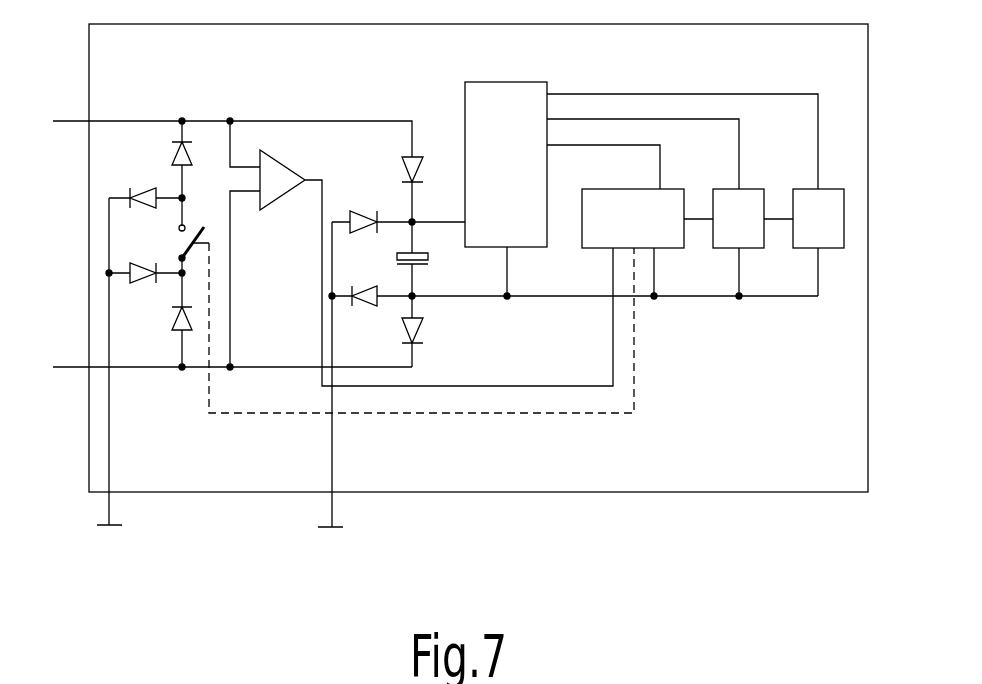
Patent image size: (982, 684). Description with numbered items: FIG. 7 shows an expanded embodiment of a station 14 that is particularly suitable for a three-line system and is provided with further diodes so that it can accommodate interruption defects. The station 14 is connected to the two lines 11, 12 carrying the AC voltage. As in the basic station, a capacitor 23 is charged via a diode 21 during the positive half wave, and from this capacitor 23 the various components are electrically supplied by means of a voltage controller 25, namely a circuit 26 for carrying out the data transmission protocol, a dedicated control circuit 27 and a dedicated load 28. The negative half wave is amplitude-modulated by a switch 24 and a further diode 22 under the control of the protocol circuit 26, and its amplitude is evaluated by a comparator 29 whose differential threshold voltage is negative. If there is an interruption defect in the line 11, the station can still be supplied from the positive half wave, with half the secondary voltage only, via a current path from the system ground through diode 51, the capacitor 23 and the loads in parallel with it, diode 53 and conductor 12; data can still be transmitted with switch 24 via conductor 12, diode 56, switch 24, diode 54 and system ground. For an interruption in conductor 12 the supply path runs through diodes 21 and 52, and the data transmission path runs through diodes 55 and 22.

The line 11 is at (68, 118).
The line 12 is at (72, 370).
The station 14 is at (755, 500).
The diode 21 is at (415, 153).
The further diode 22 is at (191, 163).
The capacitor 23 is at (430, 262).
The switch 24 is at (181, 245).
The voltage controller 25 is at (530, 82).
The circuit for carrying out the data transmission protocol 26 is at (672, 248).
The dedicated control circuit 27 is at (753, 248).
The dedicated load 28 is at (833, 248).
The comparator 29 is at (285, 195).
The diode 51 is at (367, 212).
The diode 52 is at (370, 307).
The diode 53 is at (422, 327).
The diode 54 is at (147, 192).
The diode 55 is at (147, 280).
The diode 56 is at (172, 325).